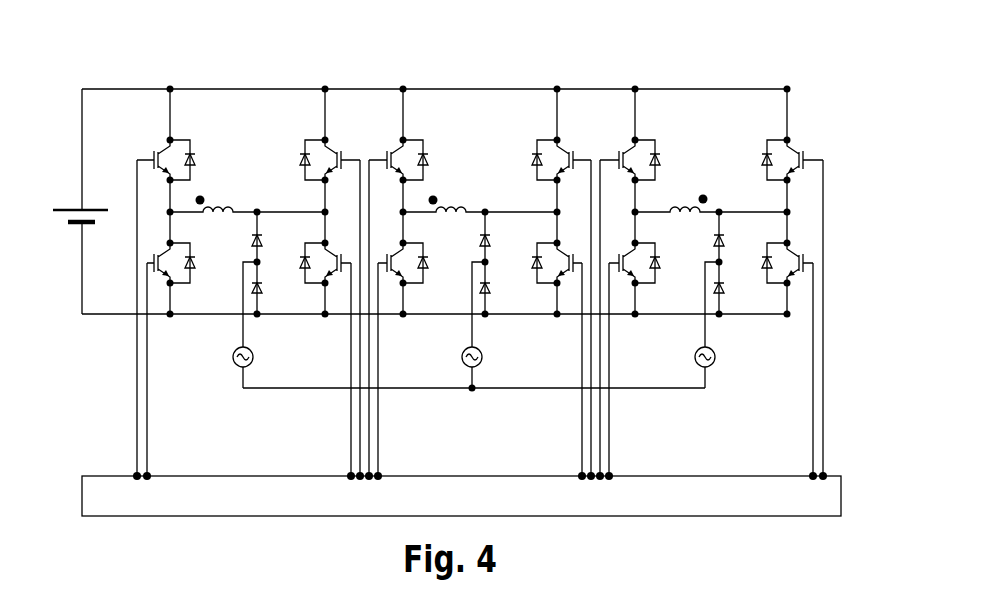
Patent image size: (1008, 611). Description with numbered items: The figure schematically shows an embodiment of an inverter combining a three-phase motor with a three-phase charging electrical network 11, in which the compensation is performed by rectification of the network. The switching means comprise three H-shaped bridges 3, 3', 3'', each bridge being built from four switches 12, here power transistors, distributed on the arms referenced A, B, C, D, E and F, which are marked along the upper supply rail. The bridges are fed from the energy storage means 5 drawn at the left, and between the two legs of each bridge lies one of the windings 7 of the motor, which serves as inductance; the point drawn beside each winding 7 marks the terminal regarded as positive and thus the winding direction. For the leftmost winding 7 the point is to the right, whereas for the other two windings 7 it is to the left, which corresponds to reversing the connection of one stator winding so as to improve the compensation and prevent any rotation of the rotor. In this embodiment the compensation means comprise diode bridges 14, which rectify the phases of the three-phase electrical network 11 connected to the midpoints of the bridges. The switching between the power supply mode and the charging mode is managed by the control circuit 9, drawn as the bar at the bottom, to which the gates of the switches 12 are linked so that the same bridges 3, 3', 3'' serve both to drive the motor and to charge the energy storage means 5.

The H-shaped bridge 3 is at (248, 166).
The H-shaped bridge 3' is at (480, 166).
The H-shaped bridge 3'' is at (711, 179).
The energy storage means 5 is at (70, 208).
The windings 7 is at (232, 203).
The control circuit 9 is at (480, 478).
The three-phase electrical network 11 is at (244, 368).
The switches 12 is at (183, 140).
The diode bridges 14 is at (242, 237).
The arm A is at (160, 98).
The arm B is at (310, 103).
The arm C is at (388, 104).
The arm D is at (566, 95).
The arm E is at (650, 94).
The arm F is at (800, 94).